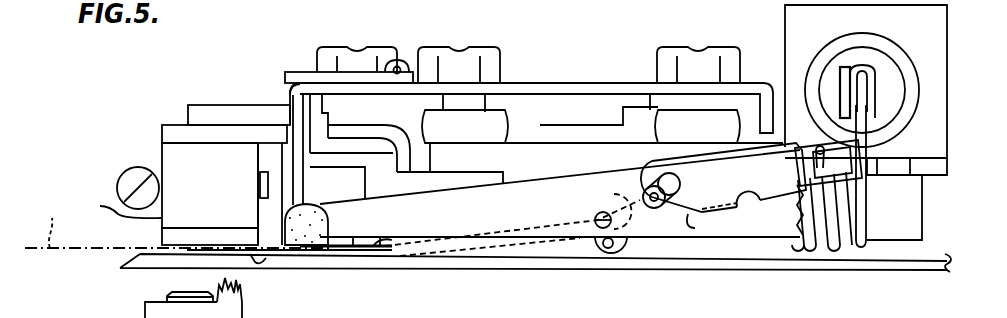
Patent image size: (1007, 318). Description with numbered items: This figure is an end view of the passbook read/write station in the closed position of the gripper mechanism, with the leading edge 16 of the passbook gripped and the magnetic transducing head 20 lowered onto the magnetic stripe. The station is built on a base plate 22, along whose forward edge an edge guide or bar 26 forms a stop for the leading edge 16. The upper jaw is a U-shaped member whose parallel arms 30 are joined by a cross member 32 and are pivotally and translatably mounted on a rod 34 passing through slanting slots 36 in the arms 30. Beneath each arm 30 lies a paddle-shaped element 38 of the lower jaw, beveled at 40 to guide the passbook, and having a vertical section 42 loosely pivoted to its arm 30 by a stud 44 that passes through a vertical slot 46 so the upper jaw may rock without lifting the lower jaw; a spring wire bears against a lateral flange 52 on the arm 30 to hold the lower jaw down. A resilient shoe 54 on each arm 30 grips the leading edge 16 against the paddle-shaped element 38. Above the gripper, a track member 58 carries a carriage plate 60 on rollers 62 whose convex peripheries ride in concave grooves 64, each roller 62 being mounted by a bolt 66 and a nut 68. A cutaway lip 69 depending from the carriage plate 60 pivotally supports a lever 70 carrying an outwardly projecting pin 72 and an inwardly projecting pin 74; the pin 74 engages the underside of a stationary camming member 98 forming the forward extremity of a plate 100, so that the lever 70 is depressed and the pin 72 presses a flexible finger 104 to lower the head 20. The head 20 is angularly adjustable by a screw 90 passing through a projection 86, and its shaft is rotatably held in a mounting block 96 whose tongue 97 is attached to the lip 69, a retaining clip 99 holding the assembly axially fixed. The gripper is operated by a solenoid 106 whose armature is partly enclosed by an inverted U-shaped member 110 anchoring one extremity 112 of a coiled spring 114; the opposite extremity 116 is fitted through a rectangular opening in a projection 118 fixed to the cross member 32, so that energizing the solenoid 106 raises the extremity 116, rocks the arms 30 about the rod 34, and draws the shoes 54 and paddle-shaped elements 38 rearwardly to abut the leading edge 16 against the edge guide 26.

The leading edge 16 is at (177, 221).
The magnetic transducing head 20 is at (201, 212).
The base plate 22 is at (476, 270).
The edge guide or bar 26 is at (358, 240).
The arm 30 is at (525, 226).
The cross member 32 is at (815, 157).
The rod 34 is at (656, 207).
The slanting slot 36 is at (670, 193).
The paddle-shaped element 38 is at (375, 253).
The bevel 40 is at (264, 262).
The vertical section 42 is at (586, 248).
The stud 44 is at (596, 214).
The vertical slot 46 is at (604, 247).
The lateral flange 52 is at (740, 210).
The shoe 54 is at (313, 240).
The track member 58 is at (590, 123).
The carriage plate 60 is at (564, 83).
The roller 62 is at (468, 140).
The groove 64 is at (512, 118).
The bolt 66 is at (443, 103).
The nut 68 is at (371, 47).
The cutaway lip 69 is at (285, 142).
The lever 70 is at (302, 162).
The outwardly projecting pin 72 is at (190, 113).
The inwardly projecting pin 74 is at (362, 165).
The projection 86 is at (116, 209).
The screw 90 is at (133, 178).
The mounting block 96 is at (145, 306).
The tongue 97 is at (244, 283).
The camming member 98 is at (357, 130).
The retaining clip 99 is at (160, 296).
The plate 100 is at (472, 178).
The finger 104 is at (170, 131).
The solenoid 106 is at (829, 42).
The inverted U-shaped member 110 is at (864, 66).
The spring extremity 112 is at (864, 122).
The coiled spring 114 is at (840, 243).
The spring extremity 116 is at (812, 195).
The projection 118 is at (860, 172).